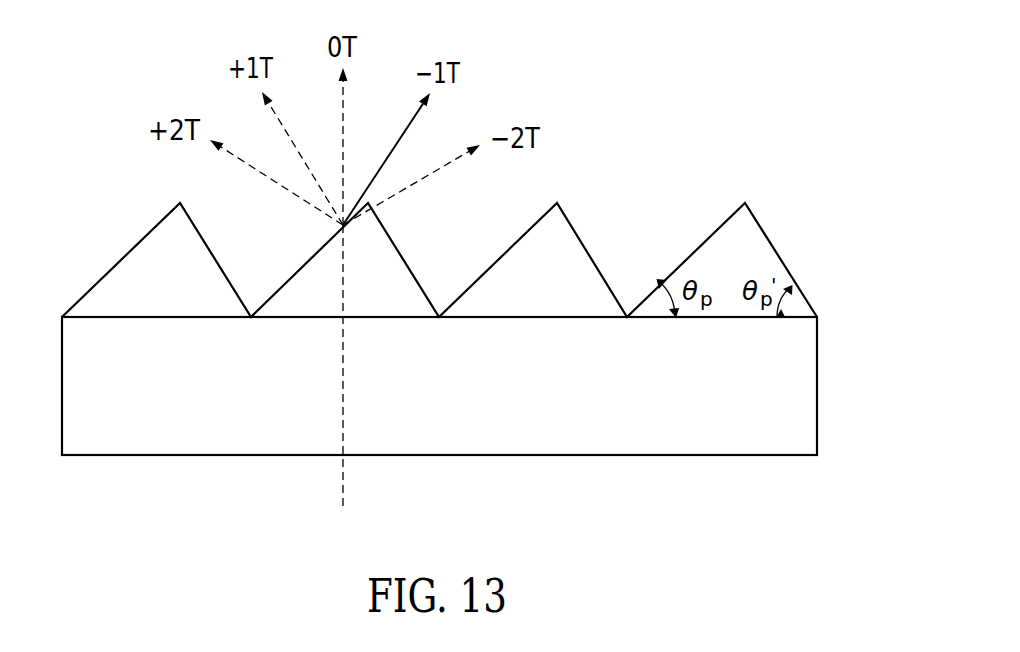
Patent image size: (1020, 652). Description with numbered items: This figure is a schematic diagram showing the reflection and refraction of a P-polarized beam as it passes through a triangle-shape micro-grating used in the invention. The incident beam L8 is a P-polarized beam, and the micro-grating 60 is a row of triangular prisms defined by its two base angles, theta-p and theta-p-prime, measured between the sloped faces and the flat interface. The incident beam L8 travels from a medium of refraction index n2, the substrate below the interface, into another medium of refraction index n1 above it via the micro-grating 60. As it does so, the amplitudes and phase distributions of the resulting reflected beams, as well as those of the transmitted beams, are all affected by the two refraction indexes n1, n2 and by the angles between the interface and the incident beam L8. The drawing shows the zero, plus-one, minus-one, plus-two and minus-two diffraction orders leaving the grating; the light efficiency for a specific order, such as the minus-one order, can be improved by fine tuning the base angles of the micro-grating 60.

The micro-grating 60 is at (600, 222).
The incident beam L8 is at (346, 387).
The refraction index n1 is at (439, 240).
The refraction index n2 is at (439, 386).